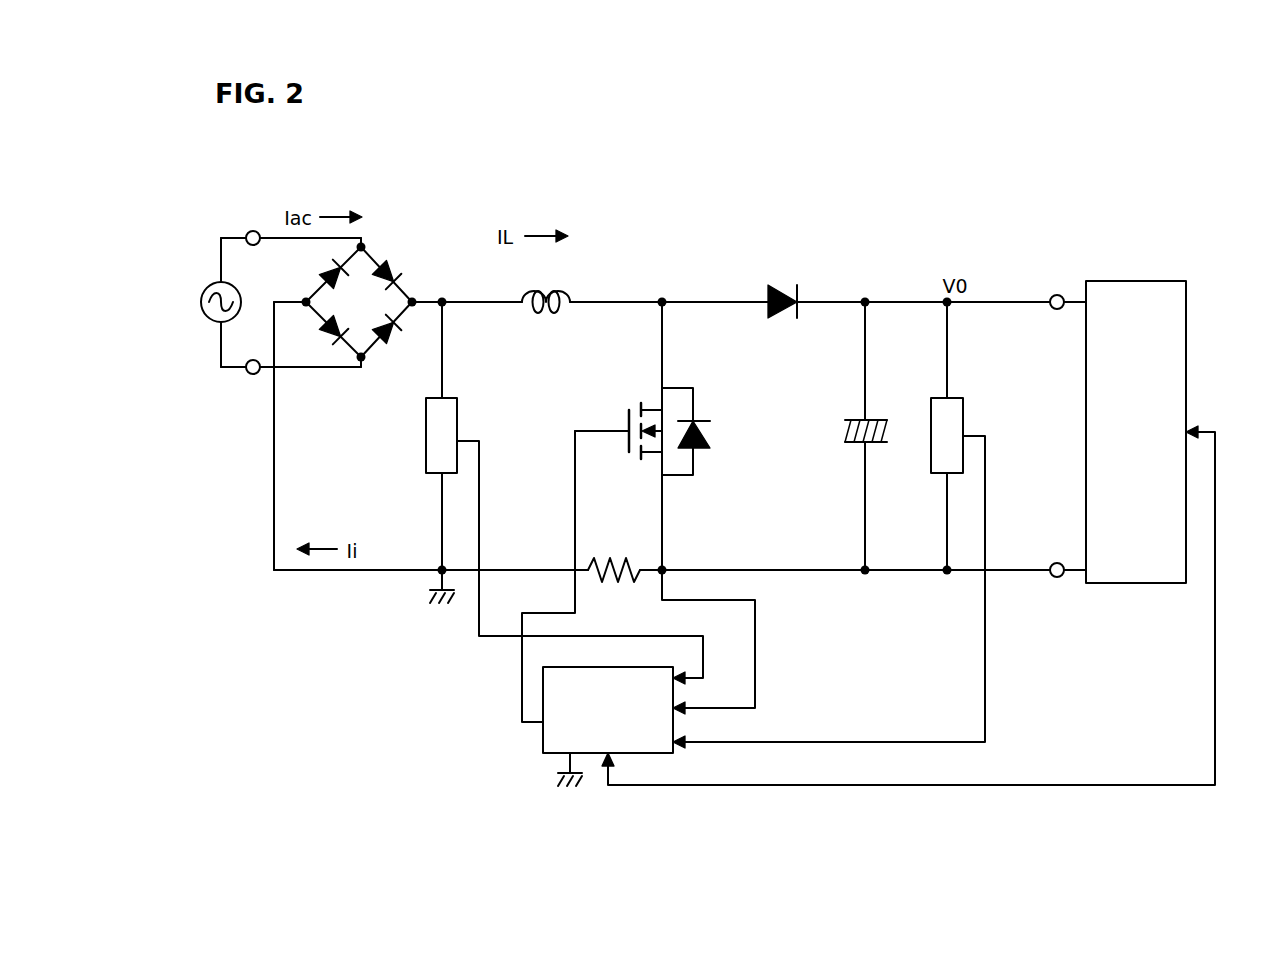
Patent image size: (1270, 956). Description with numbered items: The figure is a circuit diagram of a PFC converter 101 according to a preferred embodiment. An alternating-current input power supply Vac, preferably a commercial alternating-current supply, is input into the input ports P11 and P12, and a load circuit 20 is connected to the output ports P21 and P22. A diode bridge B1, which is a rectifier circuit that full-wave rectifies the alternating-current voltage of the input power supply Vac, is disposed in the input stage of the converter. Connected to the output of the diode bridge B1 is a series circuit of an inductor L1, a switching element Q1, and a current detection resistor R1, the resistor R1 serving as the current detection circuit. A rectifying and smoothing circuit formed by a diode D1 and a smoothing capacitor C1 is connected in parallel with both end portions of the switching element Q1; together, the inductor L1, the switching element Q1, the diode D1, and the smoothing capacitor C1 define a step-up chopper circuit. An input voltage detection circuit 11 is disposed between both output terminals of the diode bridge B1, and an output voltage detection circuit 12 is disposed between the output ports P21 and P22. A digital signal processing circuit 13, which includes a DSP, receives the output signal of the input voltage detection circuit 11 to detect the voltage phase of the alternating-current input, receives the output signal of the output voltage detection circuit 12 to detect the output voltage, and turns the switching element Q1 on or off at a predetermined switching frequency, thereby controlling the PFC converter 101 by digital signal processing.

The PFC converter 101 is at (858, 186).
The input voltage detection circuit 11 is at (457, 397).
The output voltage detection circuit 12 is at (963, 398).
The digital signal processing circuit 13 is at (628, 667).
The load circuit 20 is at (1116, 281).
The diode bridge B1 is at (411, 252).
The inductor L1 is at (546, 291).
The diode D1 is at (782, 286).
The switching element Q1 is at (642, 436).
The current detection resistor R1 is at (614, 559).
The smoothing capacitor C1 is at (873, 436).
The input port P11 is at (256, 230).
The input port P12 is at (250, 375).
The output port P21 is at (1056, 294).
The output port P22 is at (1055, 578).
The alternating-current input power supply Vac is at (210, 292).